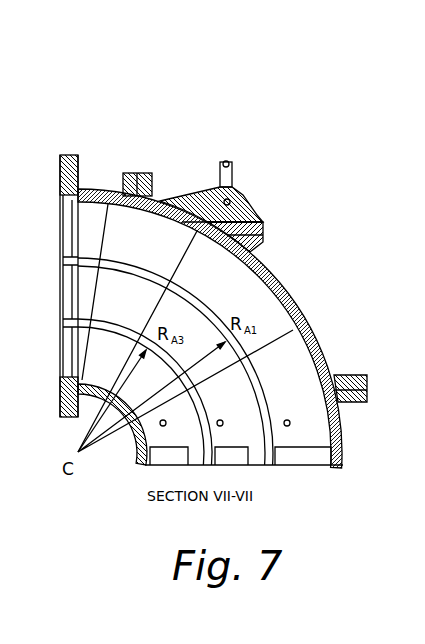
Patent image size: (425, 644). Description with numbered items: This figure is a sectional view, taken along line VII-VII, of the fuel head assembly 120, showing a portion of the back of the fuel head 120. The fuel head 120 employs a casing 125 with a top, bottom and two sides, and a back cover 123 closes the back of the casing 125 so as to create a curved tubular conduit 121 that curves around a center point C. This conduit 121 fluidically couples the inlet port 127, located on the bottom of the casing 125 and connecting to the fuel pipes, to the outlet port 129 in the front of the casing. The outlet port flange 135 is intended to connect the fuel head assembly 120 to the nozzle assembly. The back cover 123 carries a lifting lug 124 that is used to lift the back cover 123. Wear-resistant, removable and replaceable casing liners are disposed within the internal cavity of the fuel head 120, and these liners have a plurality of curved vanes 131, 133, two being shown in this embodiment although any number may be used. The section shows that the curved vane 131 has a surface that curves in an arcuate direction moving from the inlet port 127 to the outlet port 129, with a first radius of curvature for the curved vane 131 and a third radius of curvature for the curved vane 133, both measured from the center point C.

The fuel head assembly 120 is at (207, 67).
The curved tubular conduit 121 is at (137, 328).
The back cover 123 is at (281, 283).
The lifting lug 124 is at (229, 201).
The casing 125 is at (140, 431).
The inlet port 127 is at (286, 456).
The outlet port 129 is at (78, 283).
The curved vane 131 is at (208, 313).
The curved vane 133 is at (110, 322).
The outlet port flange 135 is at (60, 172).